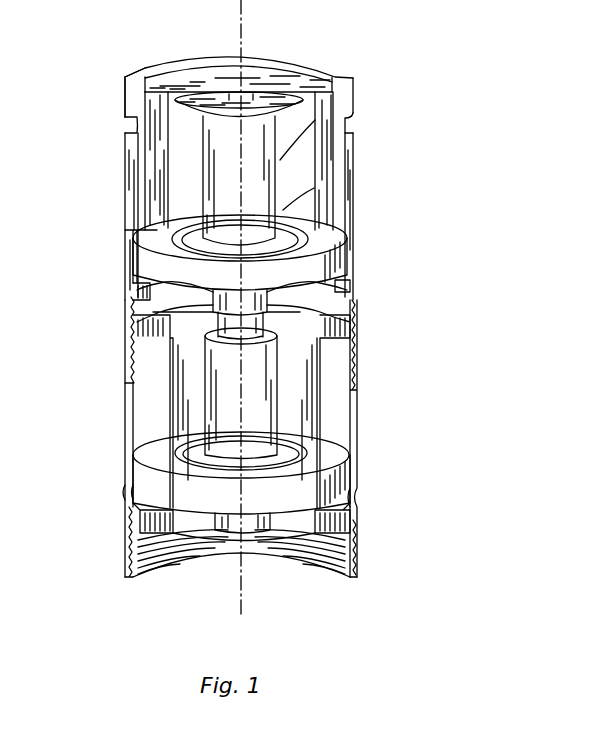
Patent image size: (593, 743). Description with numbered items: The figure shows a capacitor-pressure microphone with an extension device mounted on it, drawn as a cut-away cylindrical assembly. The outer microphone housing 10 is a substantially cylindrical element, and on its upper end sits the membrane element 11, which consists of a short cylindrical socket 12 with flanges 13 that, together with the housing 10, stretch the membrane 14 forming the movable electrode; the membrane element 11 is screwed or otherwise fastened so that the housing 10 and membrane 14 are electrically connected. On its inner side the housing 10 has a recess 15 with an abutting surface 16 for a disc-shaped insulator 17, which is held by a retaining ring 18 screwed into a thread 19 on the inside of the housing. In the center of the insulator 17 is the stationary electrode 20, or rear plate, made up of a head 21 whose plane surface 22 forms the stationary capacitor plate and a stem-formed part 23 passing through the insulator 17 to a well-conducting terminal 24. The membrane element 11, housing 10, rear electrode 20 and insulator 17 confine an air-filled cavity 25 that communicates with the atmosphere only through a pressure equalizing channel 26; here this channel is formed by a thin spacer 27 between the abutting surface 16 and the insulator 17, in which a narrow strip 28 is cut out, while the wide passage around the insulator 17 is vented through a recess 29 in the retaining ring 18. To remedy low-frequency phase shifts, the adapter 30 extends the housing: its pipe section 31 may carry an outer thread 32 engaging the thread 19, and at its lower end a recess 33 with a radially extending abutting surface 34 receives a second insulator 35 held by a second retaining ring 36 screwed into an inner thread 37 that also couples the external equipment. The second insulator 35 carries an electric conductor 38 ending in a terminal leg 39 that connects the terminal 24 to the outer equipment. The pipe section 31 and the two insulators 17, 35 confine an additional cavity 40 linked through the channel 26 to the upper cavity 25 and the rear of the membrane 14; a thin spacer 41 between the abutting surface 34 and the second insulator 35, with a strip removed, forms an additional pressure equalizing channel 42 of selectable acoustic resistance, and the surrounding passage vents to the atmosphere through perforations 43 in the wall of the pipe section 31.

The microphone housing 10 is at (342, 170).
The membrane element 11 is at (346, 66).
The cylindrical socket 12 is at (127, 108).
The flanges 13 is at (142, 70).
The membrane 14 is at (293, 84).
The recess 15 is at (203, 256).
The abutting surface 16 is at (133, 243).
The insulator 17 is at (328, 268).
The retaining ring 18 is at (153, 307).
The thread 19 is at (337, 313).
The stationary electrode 20 is at (345, 112).
The head 21 is at (263, 98).
The plane surface 22 is at (218, 98).
The stem-formed part 23 is at (222, 172).
The terminal 24 is at (323, 340).
The cavity 25 is at (303, 202).
The pressure equalizing channel 26 is at (207, 288).
The spacer 27 is at (347, 235).
The strip 28 is at (205, 247).
The recess 29 is at (350, 287).
The adapter 30 is at (377, 428).
The pipe section 31 is at (143, 413).
The thread 32 is at (128, 348).
The recess 33 is at (133, 481).
The abutting surface 34 is at (198, 462).
The second insulator 35 is at (323, 485).
The second retaining ring 36 is at (340, 520).
The inner thread 37 is at (135, 550).
The electric conductor 38 is at (262, 405).
The terminal leg 39 is at (260, 523).
The additional cavity 40 is at (307, 360).
The spacer 41 is at (322, 465).
The additional pressure equalizing channel 42 is at (193, 472).
The perforations 43 is at (360, 498).